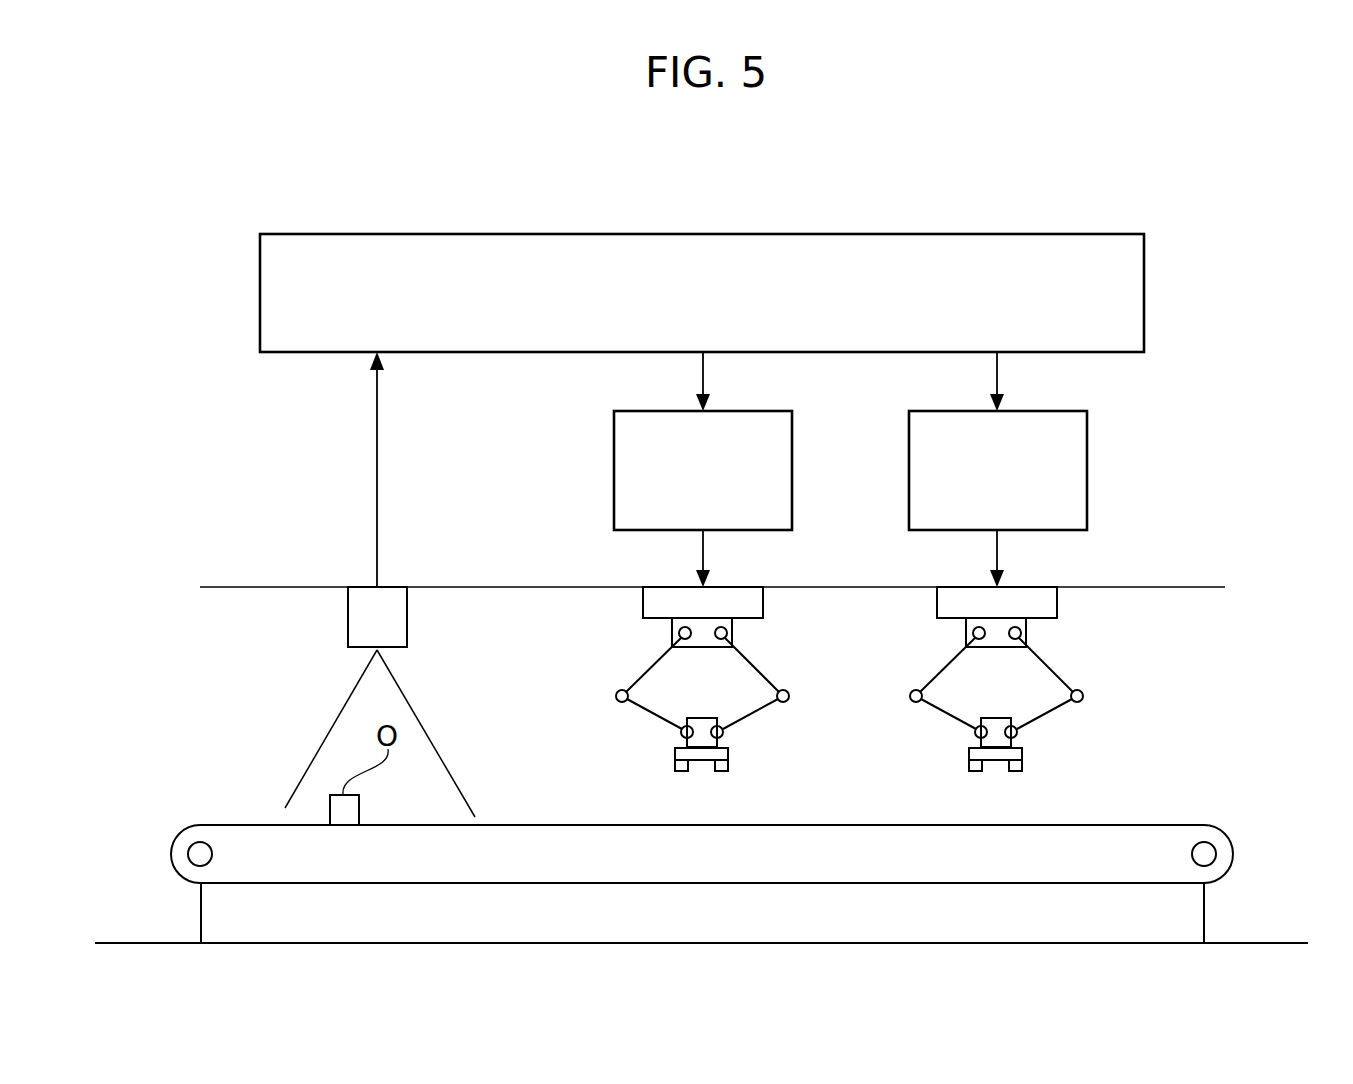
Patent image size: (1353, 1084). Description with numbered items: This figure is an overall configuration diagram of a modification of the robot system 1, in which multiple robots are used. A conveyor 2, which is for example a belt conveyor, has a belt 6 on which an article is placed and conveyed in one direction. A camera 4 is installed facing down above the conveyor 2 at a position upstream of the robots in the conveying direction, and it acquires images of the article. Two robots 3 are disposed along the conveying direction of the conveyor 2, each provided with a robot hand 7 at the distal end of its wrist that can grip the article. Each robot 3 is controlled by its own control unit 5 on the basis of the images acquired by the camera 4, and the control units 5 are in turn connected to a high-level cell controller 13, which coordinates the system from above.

The robot system 1 is at (176, 262).
The cell controller 13 is at (692, 233).
The control unit 5 is at (614, 466).
The camera 4 is at (348, 618).
The robot 3 is at (795, 637).
The robot hand 7 is at (723, 771).
The conveyor 2 is at (200, 818).
The belt 6 is at (532, 824).